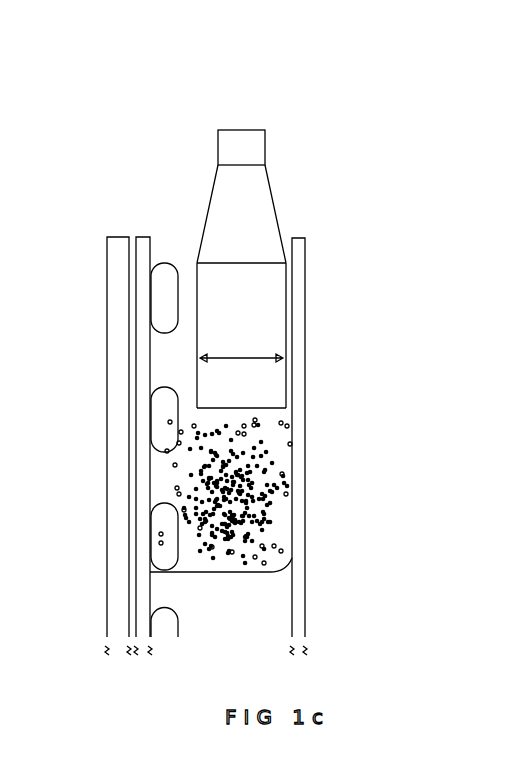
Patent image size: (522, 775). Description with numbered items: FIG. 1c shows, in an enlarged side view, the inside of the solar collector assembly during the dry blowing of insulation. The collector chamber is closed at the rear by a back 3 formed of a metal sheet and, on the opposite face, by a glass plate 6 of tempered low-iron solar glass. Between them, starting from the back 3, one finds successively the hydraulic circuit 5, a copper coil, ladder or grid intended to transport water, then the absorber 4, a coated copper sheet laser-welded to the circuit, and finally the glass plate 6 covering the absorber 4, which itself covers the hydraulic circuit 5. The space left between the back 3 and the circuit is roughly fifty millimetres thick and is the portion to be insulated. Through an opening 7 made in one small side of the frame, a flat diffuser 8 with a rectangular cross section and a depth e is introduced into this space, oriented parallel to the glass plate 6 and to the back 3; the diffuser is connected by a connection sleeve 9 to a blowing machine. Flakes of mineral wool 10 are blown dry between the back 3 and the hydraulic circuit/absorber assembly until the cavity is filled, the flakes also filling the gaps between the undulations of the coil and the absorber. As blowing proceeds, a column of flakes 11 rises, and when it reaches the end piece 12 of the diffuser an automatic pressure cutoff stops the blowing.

The back 3 is at (300, 410).
The absorber 4 is at (141, 236).
The hydraulic circuit 5 is at (163, 293).
The glass plate 6 is at (129, 344).
The opening 7 is at (284, 263).
The flat diffuser 8 is at (276, 190).
The connection sleeve 9 is at (255, 147).
The flakes of mineral wool 10 is at (280, 456).
The column of flakes 11 is at (275, 586).
The end piece 12 is at (272, 406).